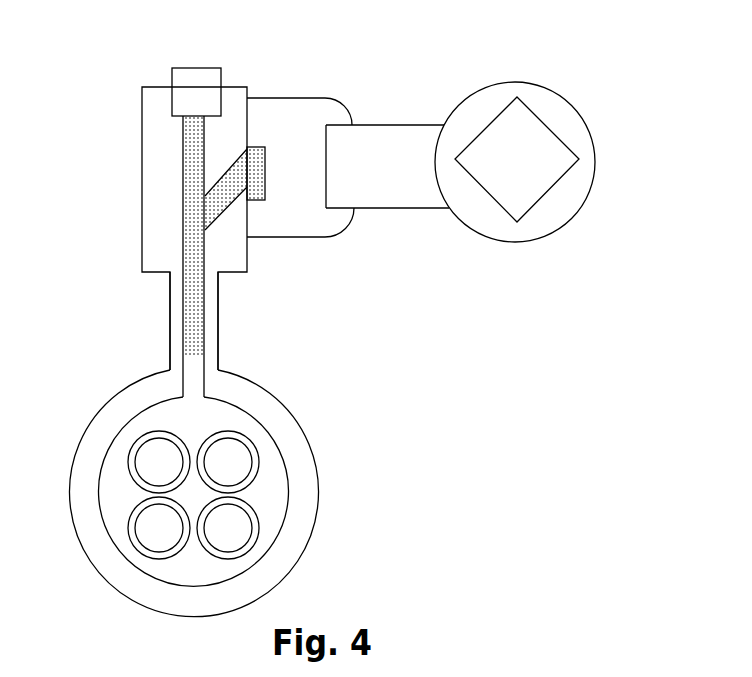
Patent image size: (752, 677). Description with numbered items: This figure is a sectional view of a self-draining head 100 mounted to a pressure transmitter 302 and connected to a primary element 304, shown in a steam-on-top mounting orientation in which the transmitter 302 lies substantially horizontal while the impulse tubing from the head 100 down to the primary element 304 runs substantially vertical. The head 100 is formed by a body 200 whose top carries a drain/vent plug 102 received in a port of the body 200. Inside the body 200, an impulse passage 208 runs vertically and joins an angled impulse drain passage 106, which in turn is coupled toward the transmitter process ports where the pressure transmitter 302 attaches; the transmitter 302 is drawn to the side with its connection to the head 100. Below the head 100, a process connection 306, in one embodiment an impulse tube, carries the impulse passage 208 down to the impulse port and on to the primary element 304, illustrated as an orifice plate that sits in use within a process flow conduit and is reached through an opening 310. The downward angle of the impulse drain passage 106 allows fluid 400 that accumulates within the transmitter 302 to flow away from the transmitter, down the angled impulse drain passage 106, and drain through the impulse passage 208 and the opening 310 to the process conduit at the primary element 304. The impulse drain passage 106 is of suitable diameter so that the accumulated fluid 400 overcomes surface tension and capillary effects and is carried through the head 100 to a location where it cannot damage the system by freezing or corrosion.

The self-draining head 100 is at (405, 92).
The drain/vent plug 102 is at (192, 73).
The impulse drain passage 106 is at (227, 207).
The body 200 is at (142, 108).
The impulse passage 208 is at (183, 175).
The pressure transmitter 302 is at (560, 100).
The primary element 304 is at (303, 552).
The process connection 306 is at (218, 340).
The opening 310 is at (193, 410).
The fluid 400 is at (195, 328).